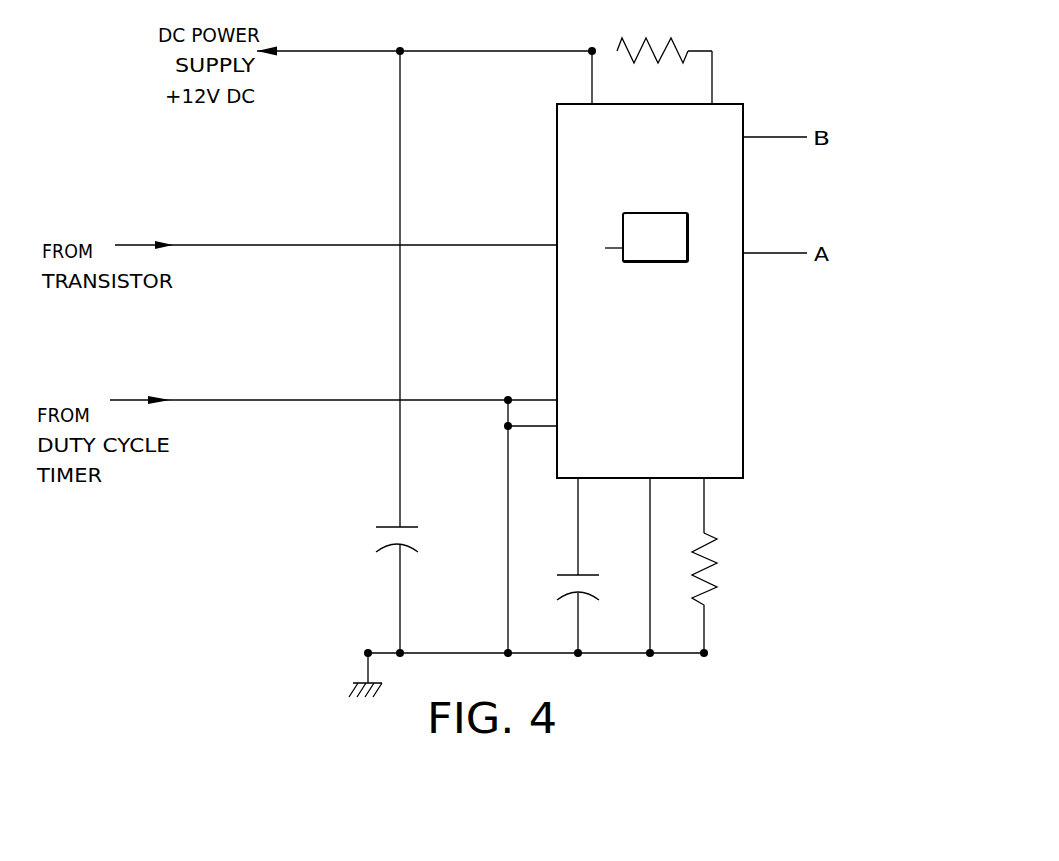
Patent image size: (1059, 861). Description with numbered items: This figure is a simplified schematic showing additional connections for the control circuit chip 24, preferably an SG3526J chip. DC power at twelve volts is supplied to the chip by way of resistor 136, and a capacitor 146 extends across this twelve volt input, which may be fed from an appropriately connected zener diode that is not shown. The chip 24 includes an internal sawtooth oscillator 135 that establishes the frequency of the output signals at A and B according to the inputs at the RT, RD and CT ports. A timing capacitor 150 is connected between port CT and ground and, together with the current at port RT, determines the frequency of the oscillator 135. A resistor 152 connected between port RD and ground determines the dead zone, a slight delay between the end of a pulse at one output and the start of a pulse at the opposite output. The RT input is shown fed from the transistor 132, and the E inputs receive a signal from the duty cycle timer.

The control circuit chip 24 is at (682, 350).
The transistor 132 is at (308, 282).
The internal sawtooth oscillator 135 is at (667, 262).
The resistor 136 is at (680, 50).
The capacitor 146 is at (386, 548).
The timing capacitor 150 is at (570, 573).
The resistor 152 is at (712, 537).